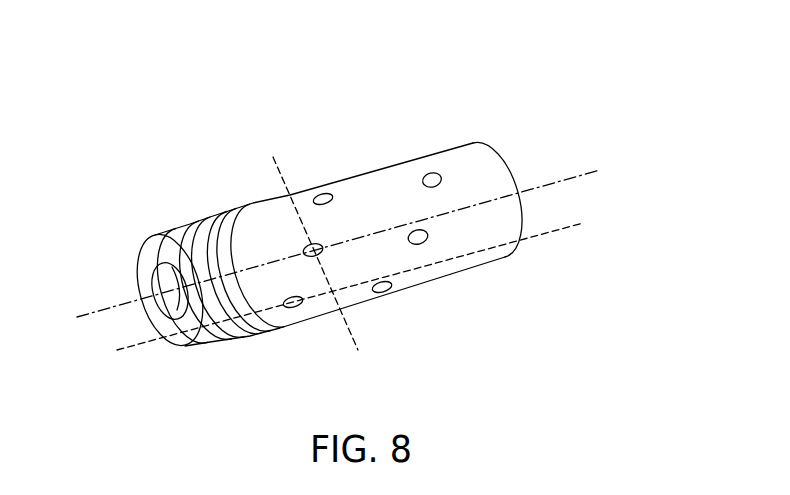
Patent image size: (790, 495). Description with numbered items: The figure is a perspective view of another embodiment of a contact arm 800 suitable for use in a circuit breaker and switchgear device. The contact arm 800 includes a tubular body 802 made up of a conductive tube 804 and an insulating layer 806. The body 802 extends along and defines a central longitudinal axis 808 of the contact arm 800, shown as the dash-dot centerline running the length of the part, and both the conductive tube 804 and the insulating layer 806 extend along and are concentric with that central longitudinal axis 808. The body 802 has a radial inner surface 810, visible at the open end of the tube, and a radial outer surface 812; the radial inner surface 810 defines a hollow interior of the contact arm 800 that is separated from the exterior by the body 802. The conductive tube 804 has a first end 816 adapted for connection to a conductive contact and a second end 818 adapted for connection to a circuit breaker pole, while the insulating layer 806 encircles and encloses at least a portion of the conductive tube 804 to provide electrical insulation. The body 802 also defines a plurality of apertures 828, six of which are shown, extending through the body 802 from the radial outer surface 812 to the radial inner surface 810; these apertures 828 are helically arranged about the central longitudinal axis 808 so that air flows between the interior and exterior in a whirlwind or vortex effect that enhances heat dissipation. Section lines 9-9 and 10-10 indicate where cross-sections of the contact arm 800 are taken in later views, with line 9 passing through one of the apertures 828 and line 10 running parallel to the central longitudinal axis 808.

The contact arm 800 is at (371, 225).
The tubular body 802 is at (237, 345).
The conductive tube 804 is at (212, 216).
The insulating layer 806 is at (431, 157).
The central longitudinal axis 808 is at (568, 173).
The radial inner surface 810 is at (150, 290).
The radial outer surface 812 is at (250, 206).
The first end 816 is at (148, 330).
The second end 818 is at (512, 168).
The apertures 828 is at (316, 249).
The line 9- 9 is at (273, 157).
The line 10- 10 is at (117, 350).